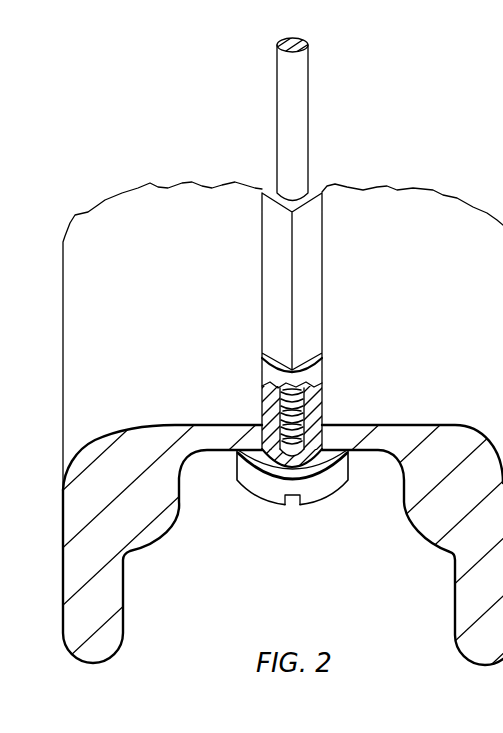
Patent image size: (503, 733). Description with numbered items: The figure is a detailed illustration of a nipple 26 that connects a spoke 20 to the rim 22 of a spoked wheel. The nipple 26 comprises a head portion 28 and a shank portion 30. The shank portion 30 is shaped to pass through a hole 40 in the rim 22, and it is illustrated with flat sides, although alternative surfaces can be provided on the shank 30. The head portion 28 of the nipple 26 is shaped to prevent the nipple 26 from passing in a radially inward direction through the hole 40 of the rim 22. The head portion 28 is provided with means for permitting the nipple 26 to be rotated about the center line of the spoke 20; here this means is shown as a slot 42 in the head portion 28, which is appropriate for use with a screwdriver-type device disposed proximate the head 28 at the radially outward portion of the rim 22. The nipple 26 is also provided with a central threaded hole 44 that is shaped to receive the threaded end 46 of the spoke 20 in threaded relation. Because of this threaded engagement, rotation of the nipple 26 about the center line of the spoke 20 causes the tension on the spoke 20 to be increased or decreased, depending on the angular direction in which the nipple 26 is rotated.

The spoke 20 is at (302, 106).
The rim 22 is at (465, 588).
The nipple 26 is at (214, 287).
The head portion 28 is at (325, 493).
The shank portion 30 is at (315, 280).
The hole 40 is at (262, 420).
The slot 42 is at (288, 505).
The central threaded hole 44 is at (313, 437).
The threaded end 46 is at (305, 402).